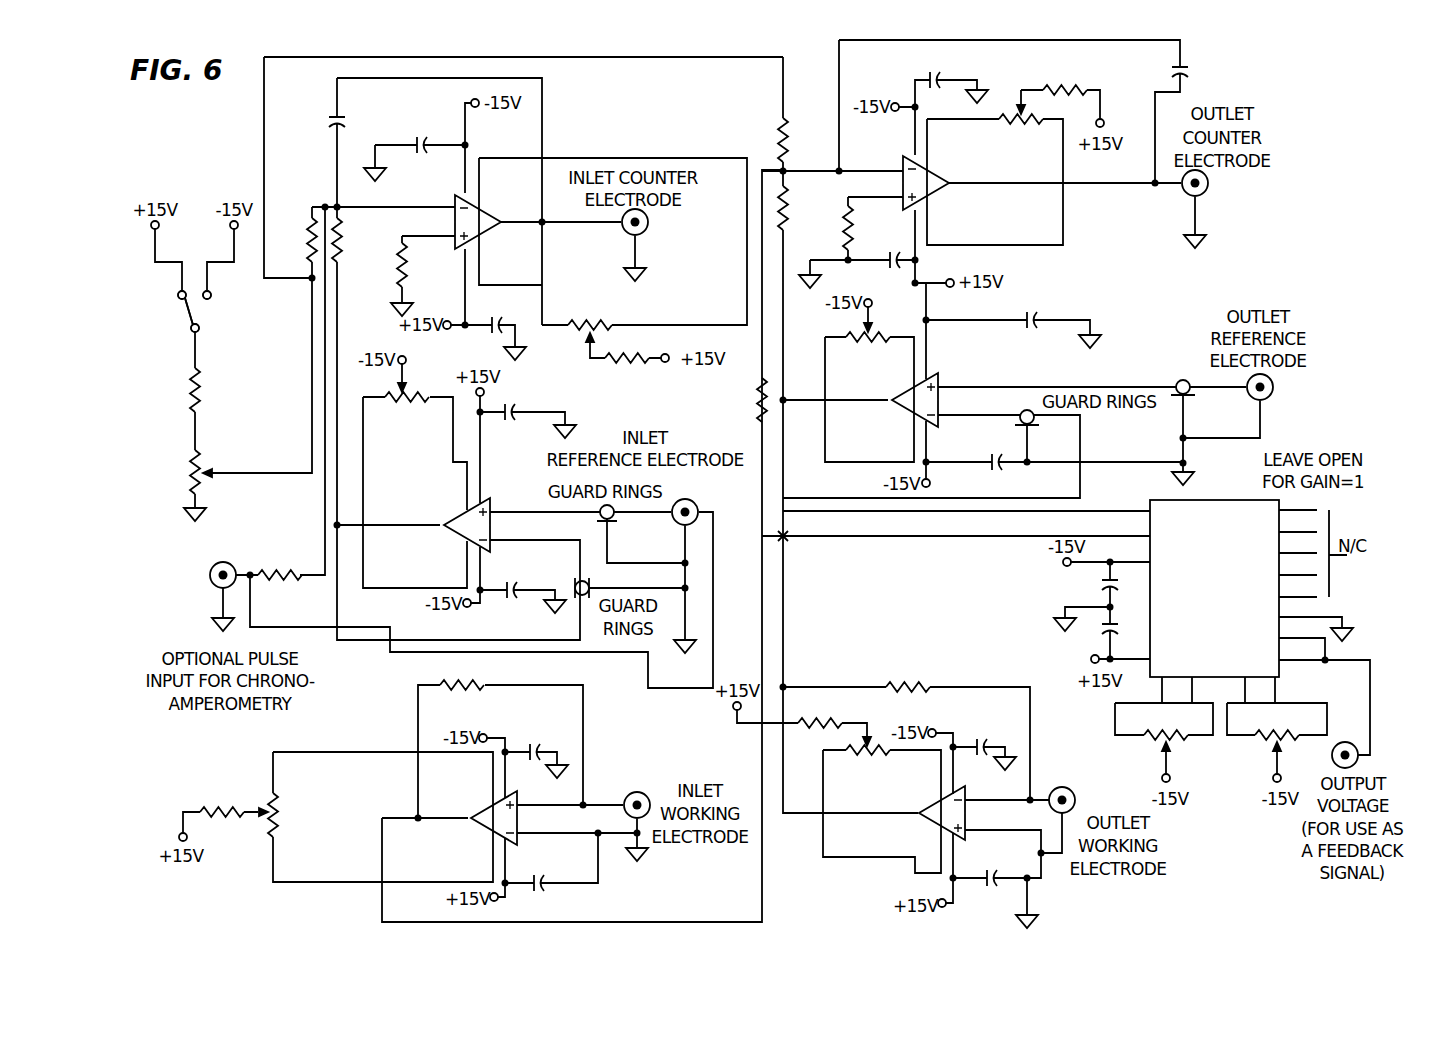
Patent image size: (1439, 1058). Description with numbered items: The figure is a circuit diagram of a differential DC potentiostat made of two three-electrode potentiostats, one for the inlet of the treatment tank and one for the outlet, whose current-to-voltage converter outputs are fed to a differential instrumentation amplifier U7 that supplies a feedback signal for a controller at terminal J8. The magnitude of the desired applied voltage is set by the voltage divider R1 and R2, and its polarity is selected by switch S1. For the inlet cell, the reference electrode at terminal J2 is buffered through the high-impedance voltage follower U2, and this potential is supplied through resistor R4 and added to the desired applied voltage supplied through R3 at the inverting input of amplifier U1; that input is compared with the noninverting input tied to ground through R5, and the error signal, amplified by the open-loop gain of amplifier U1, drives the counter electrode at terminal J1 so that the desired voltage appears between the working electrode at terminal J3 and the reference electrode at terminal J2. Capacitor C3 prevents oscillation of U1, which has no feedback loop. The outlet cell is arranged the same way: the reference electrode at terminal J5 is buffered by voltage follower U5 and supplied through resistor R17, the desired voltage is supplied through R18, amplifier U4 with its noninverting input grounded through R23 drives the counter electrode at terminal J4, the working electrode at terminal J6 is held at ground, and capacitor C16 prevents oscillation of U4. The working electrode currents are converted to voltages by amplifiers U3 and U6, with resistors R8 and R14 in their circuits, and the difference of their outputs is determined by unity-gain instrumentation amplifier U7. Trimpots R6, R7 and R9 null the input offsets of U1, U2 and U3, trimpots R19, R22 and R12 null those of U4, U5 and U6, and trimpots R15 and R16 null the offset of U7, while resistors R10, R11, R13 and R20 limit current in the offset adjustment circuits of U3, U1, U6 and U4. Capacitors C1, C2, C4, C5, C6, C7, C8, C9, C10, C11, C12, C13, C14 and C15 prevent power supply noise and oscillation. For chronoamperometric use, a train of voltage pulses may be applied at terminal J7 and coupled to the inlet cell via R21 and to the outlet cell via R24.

The polarity switch S1 is at (228, 309).
The voltage divider resistor R1 is at (215, 396).
The voltage divider resistor R2 is at (242, 484).
The resistor R3 is at (293, 244).
The resistor R4 is at (355, 246).
The resistor R5 is at (416, 274).
The trimpot R6 is at (621, 303).
The trimpot R7 is at (408, 422).
The resistor R8 is at (461, 687).
The trimpot R9 is at (312, 821).
The resistor R10 is at (216, 790).
The resistor R11 is at (632, 359).
The trimpot R12 is at (867, 775).
The resistor R13 is at (820, 737).
The resistor R14 is at (910, 675).
The trimpot R15 is at (1165, 724).
The trimpot R16 is at (1277, 724).
The resistor R17 is at (800, 211).
The resistor R18 is at (801, 132).
The trimpot R19 is at (1018, 144).
The resistor R20 is at (1062, 76).
The resistor R21 is at (283, 577).
The trimpot R22 is at (868, 349).
The resistor R23 is at (838, 223).
The resistor R24 is at (746, 402).
The capacitor C1 is at (417, 149).
The capacitor C2 is at (482, 325).
The capacitor C3 is at (367, 112).
The capacitor C4 is at (511, 413).
The capacitor C5 is at (509, 594).
The capacitor C6 is at (534, 733).
The capacitor C7 is at (536, 886).
The capacitor C8 is at (987, 882).
The capacitor C9 is at (984, 725).
The capacitor C10 is at (1106, 589).
The capacitor C11 is at (1107, 632).
The capacitor C12 is at (994, 464).
The capacitor C13 is at (1029, 321).
The capacitor C14 is at (882, 260).
The capacitor C15 is at (943, 69).
The capacitor C16 is at (1211, 67).
The operational amplifier U1 is at (496, 222).
The high-impedance voltage follower U2 is at (447, 528).
The current-to-voltage converter amplifier U3 is at (473, 818).
The operational amplifier U4 is at (945, 185).
The high-impedance voltage follower U5 is at (895, 402).
The current-to-voltage converter amplifier U6 is at (920, 815).
The instrumentation amplifier U7 is at (1220, 589).
The counter electrode terminal J1 is at (646, 222).
The reference electrode terminal J2 is at (636, 535).
The working electrode terminal J3 is at (637, 792).
The counter electrode terminal J4 is at (1205, 184).
The reference electrode terminal J5 is at (1156, 399).
The working electrode terminal J6 is at (1055, 791).
The pulse input terminal J7 is at (223, 562).
The output terminal J8 is at (1345, 746).